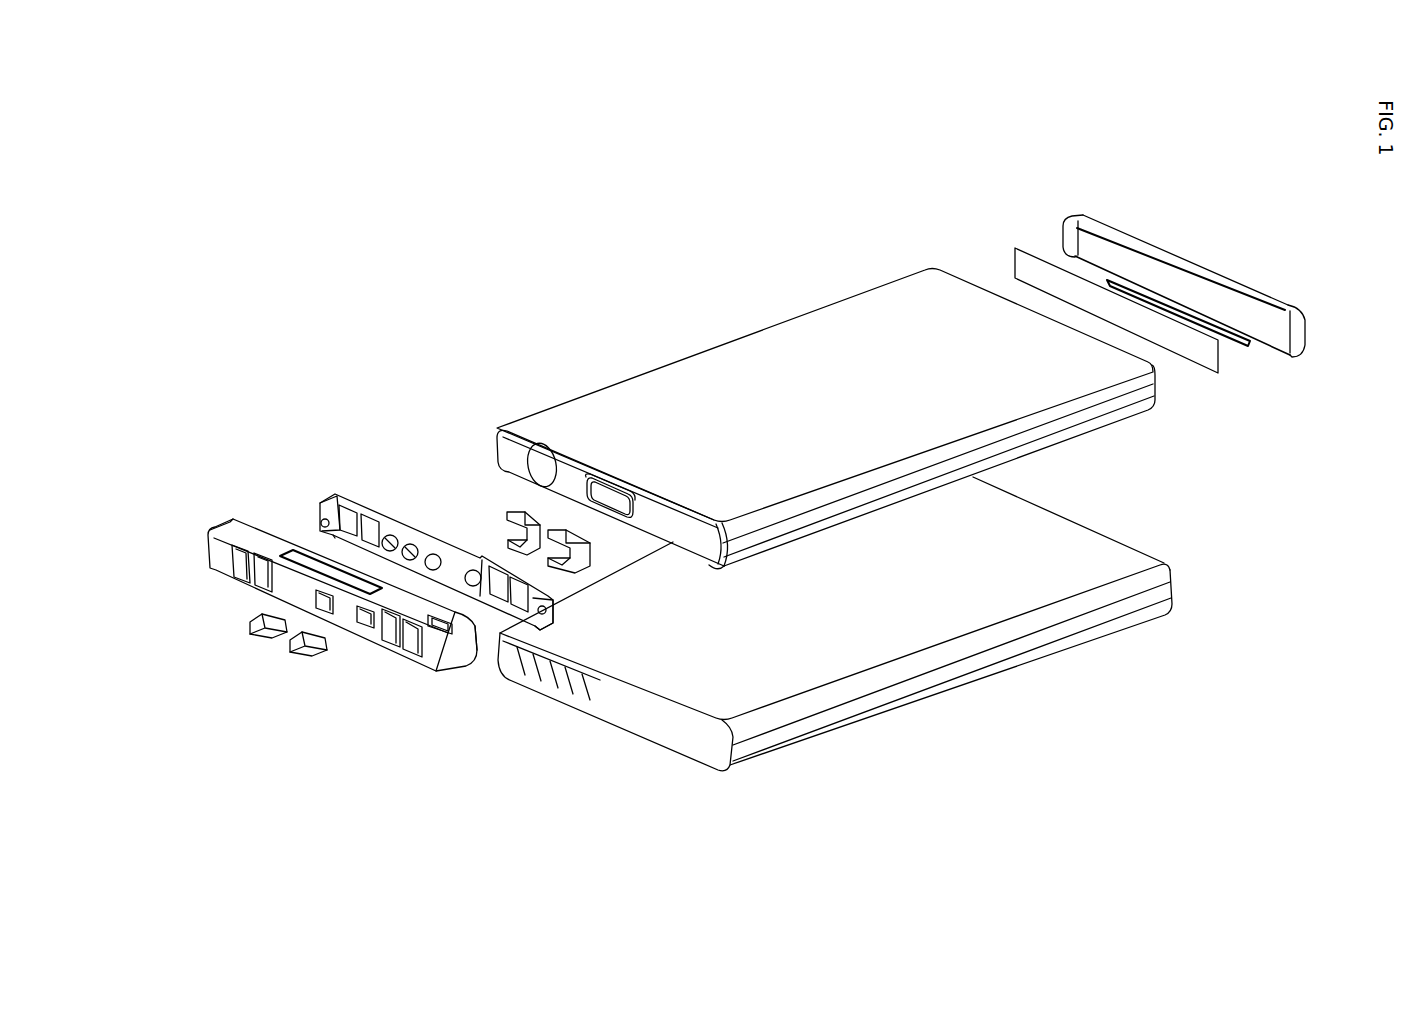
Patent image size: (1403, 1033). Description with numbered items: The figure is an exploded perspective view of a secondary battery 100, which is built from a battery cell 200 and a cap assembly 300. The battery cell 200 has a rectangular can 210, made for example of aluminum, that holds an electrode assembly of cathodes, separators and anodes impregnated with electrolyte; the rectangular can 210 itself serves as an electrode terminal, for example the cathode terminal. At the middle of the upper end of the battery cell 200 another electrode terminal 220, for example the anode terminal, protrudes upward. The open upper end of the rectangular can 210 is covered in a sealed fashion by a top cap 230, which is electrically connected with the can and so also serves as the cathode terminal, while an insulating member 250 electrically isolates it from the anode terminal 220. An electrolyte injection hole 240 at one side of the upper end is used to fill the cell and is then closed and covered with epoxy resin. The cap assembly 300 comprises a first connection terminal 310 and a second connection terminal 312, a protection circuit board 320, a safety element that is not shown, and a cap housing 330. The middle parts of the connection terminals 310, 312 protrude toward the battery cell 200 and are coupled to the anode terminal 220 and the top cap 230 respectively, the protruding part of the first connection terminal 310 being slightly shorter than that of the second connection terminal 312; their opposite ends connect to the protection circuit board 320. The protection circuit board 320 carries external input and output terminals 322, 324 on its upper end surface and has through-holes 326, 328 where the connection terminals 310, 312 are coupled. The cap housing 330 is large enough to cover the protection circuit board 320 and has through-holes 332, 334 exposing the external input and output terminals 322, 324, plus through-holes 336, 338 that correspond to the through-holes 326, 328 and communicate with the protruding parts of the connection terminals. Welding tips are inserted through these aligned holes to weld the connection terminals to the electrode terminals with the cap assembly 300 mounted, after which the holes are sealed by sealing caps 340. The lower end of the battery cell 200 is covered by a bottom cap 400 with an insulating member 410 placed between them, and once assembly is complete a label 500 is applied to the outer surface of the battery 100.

The secondary battery 100 is at (195, 115).
The battery cell 200 is at (815, 387).
The rectangular can 210 is at (787, 348).
The electrode terminal (anode terminal) 220 is at (613, 500).
The top cap 230 is at (750, 540).
The electrolyte injection hole 240 is at (542, 465).
The insulating member 250 is at (600, 473).
The cap assembly 300 is at (352, 317).
The first connection terminal 310 is at (507, 512).
The second connection terminal 312 is at (587, 557).
The protection circuit board 320 is at (367, 585).
The external input and output terminal 322 is at (335, 498).
The external input and output terminal 324 is at (525, 622).
The through-hole 326 is at (410, 550).
The through-hole 328 is at (465, 624).
The cap housing 330 is at (279, 662).
The through-hole 332 is at (223, 575).
The through-hole 334 is at (402, 655).
The through-hole 336 is at (325, 605).
The through-hole 338 is at (355, 645).
The sealing cap 340 is at (288, 643).
The bottom cap 400 is at (1180, 245).
The insulating member 410 is at (1203, 368).
The label 500 is at (847, 683).